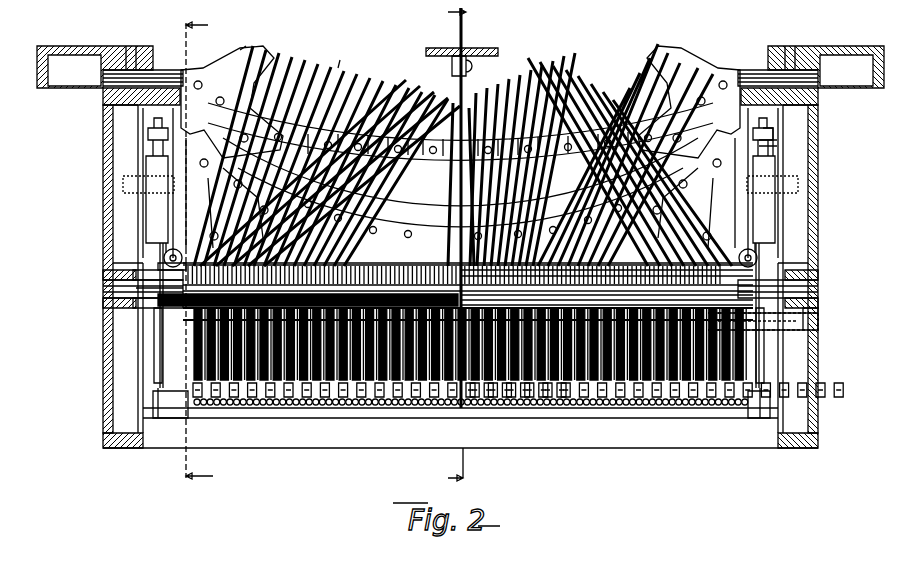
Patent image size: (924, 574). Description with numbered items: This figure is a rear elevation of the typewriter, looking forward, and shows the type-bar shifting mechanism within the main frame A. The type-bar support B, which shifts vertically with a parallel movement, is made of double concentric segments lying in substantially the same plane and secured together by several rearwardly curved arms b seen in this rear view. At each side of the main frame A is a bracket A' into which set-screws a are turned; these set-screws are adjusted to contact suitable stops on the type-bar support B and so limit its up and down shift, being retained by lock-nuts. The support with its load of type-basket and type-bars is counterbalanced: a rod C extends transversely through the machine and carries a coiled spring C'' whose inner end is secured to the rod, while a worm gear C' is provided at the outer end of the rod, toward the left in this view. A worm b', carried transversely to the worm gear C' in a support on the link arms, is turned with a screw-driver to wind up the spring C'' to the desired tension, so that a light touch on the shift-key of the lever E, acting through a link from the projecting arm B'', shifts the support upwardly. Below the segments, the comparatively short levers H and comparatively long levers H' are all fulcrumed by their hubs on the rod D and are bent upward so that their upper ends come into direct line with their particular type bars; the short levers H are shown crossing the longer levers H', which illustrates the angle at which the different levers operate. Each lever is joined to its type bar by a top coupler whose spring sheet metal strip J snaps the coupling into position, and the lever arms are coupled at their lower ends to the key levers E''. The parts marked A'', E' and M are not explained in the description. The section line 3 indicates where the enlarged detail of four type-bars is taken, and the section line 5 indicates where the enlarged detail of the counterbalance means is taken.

The main frame A is at (460, 247).
The bracket A' is at (461, 183).
The set-screw a is at (768, 136).
The type guide A'' is at (462, 208).
The type-bar support B is at (460, 146).
The projecting arm B'' is at (461, 252).
The rearwardly curved arm b is at (477, 279).
The worm b' is at (122, 263).
The rod C is at (130, 278).
The worm gear C' is at (134, 303).
The coiled spring C'' is at (121, 293).
The rod D is at (810, 316).
The lever E is at (457, 331).
The lever bracket E' is at (473, 414).
The key lever E'' is at (493, 412).
The lever H is at (460, 252).
The lever H' is at (345, 61).
The strip of spring sheet metal J is at (262, 40).
The type bar link M is at (238, 38).
The section line 3 is at (463, 252).
The section line 5 is at (206, 251).